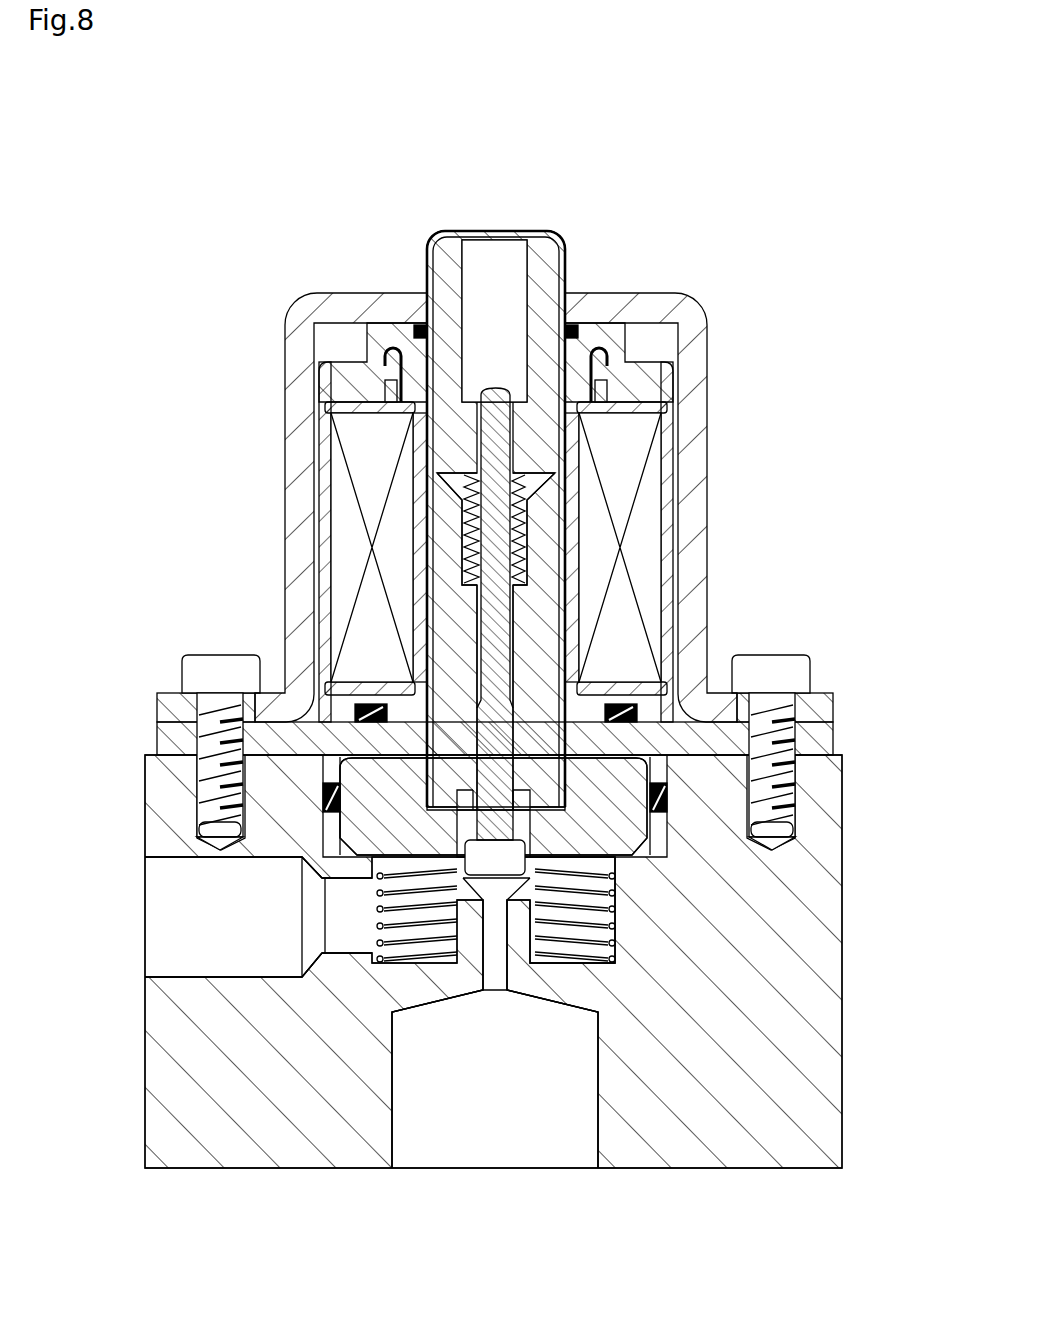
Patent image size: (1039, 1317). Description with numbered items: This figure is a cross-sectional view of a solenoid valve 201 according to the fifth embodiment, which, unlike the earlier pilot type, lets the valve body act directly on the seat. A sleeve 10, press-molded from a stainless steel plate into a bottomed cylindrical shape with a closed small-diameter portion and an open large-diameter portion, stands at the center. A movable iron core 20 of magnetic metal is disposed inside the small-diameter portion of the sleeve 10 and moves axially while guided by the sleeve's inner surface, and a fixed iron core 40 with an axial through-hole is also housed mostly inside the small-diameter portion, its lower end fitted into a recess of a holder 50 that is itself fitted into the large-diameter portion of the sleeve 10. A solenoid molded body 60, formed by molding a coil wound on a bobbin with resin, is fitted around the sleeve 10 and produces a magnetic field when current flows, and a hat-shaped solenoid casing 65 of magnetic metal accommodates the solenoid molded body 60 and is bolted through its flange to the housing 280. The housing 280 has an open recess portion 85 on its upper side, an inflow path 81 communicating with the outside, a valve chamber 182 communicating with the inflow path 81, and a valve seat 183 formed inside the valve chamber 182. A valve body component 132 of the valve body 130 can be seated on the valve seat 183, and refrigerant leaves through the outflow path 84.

The solenoid valve 201 is at (700, 213).
The sleeve 10 is at (485, 214).
The movable iron core 20 is at (540, 233).
The valve body 130 is at (486, 370).
The fixed iron core 40 is at (452, 572).
The solenoid molded body 60 is at (656, 337).
The solenoid casing 65 is at (693, 426).
The holder 50 is at (170, 753).
The housing 280 is at (167, 785).
The inflow path 81 is at (193, 857).
The open recess portion 85 is at (372, 878).
The valve chamber 182 is at (617, 867).
The valve seat 183 is at (617, 918).
The valve body component 132 is at (488, 880).
The outflow path 84 is at (596, 1120).